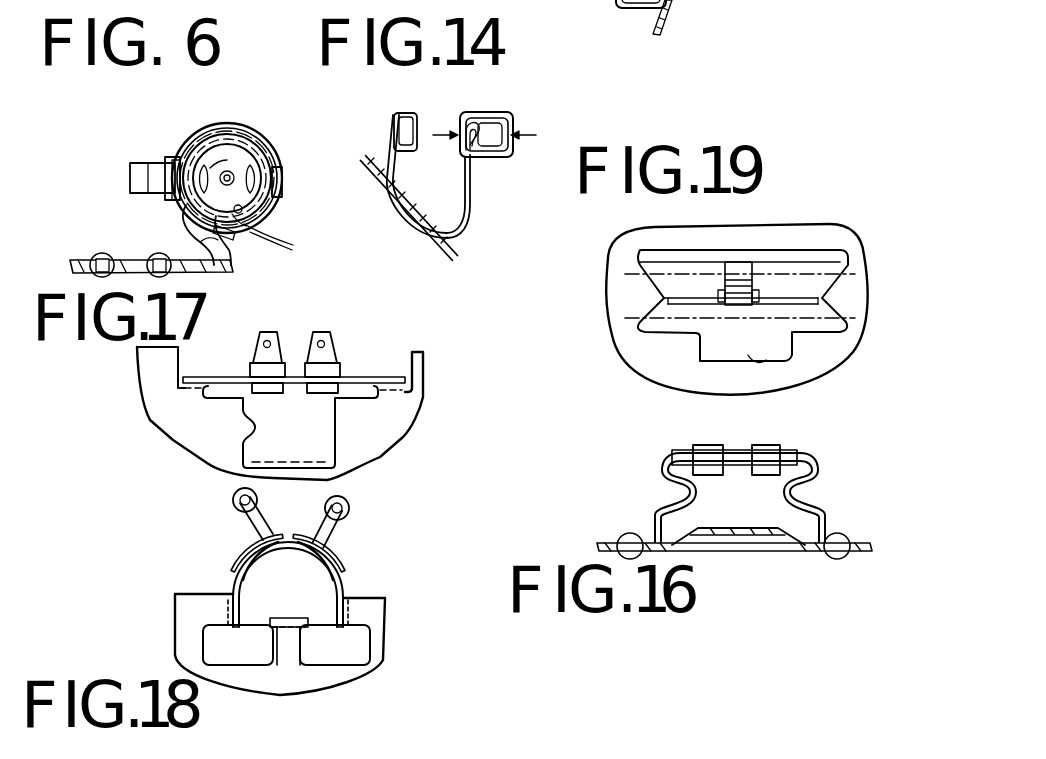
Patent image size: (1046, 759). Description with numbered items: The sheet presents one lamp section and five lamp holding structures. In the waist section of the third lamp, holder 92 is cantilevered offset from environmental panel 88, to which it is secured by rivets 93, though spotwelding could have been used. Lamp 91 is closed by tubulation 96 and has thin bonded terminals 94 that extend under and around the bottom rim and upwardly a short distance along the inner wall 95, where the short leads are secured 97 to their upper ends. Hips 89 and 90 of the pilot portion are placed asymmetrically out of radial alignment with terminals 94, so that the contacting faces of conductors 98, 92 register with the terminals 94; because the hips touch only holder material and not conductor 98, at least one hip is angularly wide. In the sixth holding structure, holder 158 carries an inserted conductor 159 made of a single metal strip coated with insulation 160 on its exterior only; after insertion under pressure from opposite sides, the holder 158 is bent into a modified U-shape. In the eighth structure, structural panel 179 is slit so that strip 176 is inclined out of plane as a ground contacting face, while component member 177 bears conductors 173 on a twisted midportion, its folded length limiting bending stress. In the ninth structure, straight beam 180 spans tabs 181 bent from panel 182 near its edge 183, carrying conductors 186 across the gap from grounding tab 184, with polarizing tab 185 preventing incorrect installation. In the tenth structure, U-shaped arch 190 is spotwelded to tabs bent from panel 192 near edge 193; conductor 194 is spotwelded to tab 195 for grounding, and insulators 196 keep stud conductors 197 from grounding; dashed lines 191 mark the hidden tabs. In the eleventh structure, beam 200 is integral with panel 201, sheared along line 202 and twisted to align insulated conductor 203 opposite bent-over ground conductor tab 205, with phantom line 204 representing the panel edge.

In FIG. 6, the environmental panel 88 is at (72, 262).
In FIG. 6, the hip 89 is at (240, 142).
In FIG. 6, the hip 90 is at (184, 206).
In FIG. 6, the lamp 91 is at (190, 142).
In FIG. 6, the holder 92 is at (102, 255).
In FIG. 6, the rivets 93 is at (160, 255).
In FIG. 6, the terminals 94 is at (193, 185).
In FIG. 6, the inner wall 95 is at (240, 215).
In FIG. 6, the tubulation 96 is at (227, 172).
In FIG. 6, the lead securement 97 is at (250, 212).
In FIG. 6, the conductor 98 is at (150, 165).
In FIG. 14, the holder 158 is at (470, 185).
In FIG. 14, the inserted conductor 159 is at (533, 100).
In FIG. 14, the insulation 160 is at (490, 115).
In FIG. 16, the conductors 173 is at (710, 452).
In FIG. 16, the strip 176 is at (735, 535).
In FIG. 16, the holding structure component member 177 is at (660, 505).
In FIG. 16, the structural panel 179 is at (598, 543).
In FIG. 17, the straight beam 180 is at (355, 377).
In FIG. 17, the tabs 181 is at (188, 393).
In FIG. 17, the panel 182 is at (185, 435).
In FIG. 17, the top edge 183 is at (152, 350).
In FIG. 17, the grounding tab 184 is at (296, 464).
In FIG. 17, the polarizing tab 185 is at (290, 427).
In FIG. 17, the conductors 186 is at (315, 345).
In FIG. 18, the U-shaped arch 190 is at (345, 572).
In FIG. 18, the slot line 191 is at (228, 600).
In FIG. 18, the panel 192 is at (385, 612).
In FIG. 18, the edge 193 is at (192, 595).
In FIG. 18, the conductor 194 is at (308, 620).
In FIG. 18, the tab 195 is at (298, 640).
In FIG. 18, the insulators 196 is at (238, 545).
In FIG. 18, the stud conductors 197 is at (247, 518).
In FIG. 19, the beam 200 is at (668, 292).
In FIG. 19, the panel 201 is at (628, 349).
In FIG. 19, the shear line 202 is at (650, 328).
In FIG. 19, the insulated conductor 203 is at (735, 265).
In FIG. 19, the phantom line 204 is at (612, 272).
In FIG. 19, the bent-over ground conductor tab 205 is at (735, 372).